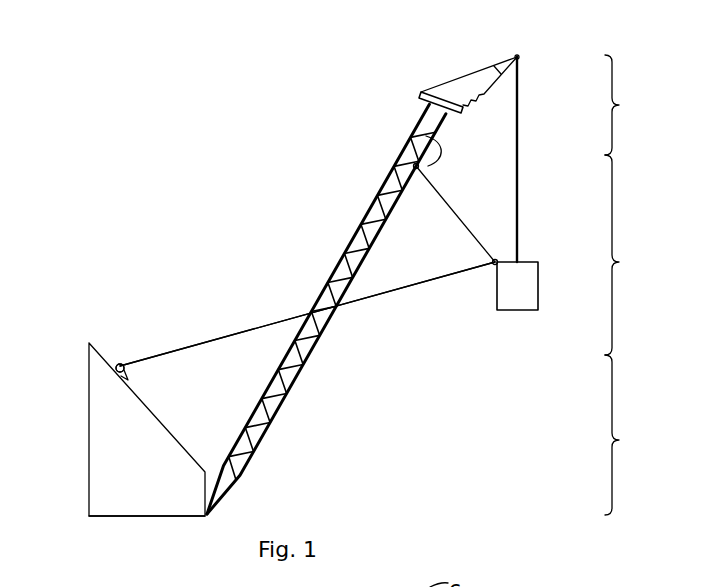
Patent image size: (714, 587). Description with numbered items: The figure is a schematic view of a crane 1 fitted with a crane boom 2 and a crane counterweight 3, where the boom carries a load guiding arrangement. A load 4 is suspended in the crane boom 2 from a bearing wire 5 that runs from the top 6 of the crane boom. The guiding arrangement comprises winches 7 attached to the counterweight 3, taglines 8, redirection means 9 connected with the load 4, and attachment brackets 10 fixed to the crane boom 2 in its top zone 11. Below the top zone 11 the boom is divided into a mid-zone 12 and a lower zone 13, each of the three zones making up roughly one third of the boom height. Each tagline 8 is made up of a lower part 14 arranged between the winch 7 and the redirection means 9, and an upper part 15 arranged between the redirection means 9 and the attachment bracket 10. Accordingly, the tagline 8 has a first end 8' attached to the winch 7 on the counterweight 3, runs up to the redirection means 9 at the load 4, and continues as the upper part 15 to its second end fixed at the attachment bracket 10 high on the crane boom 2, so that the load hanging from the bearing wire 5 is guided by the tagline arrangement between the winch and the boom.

The crane 1 is at (154, 518).
The crane boom 2 is at (352, 238).
The crane counterweight 3 is at (86, 435).
The load 4 is at (541, 291).
The bearing wire 5 is at (519, 141).
The top of the crane boom 6 is at (521, 58).
The winch 7 is at (119, 356).
The tagline 8 is at (307, 316).
The first end of the tagline 8' is at (159, 385).
The redirection means 9 is at (491, 268).
The attachment bracket 10 is at (422, 143).
The top zone 11 is at (629, 105).
The mid-zone 12 is at (629, 255).
The lower zone 13 is at (629, 435).
The lower part of the tagline 14 is at (368, 300).
The upper part of the tagline 15 is at (457, 212).